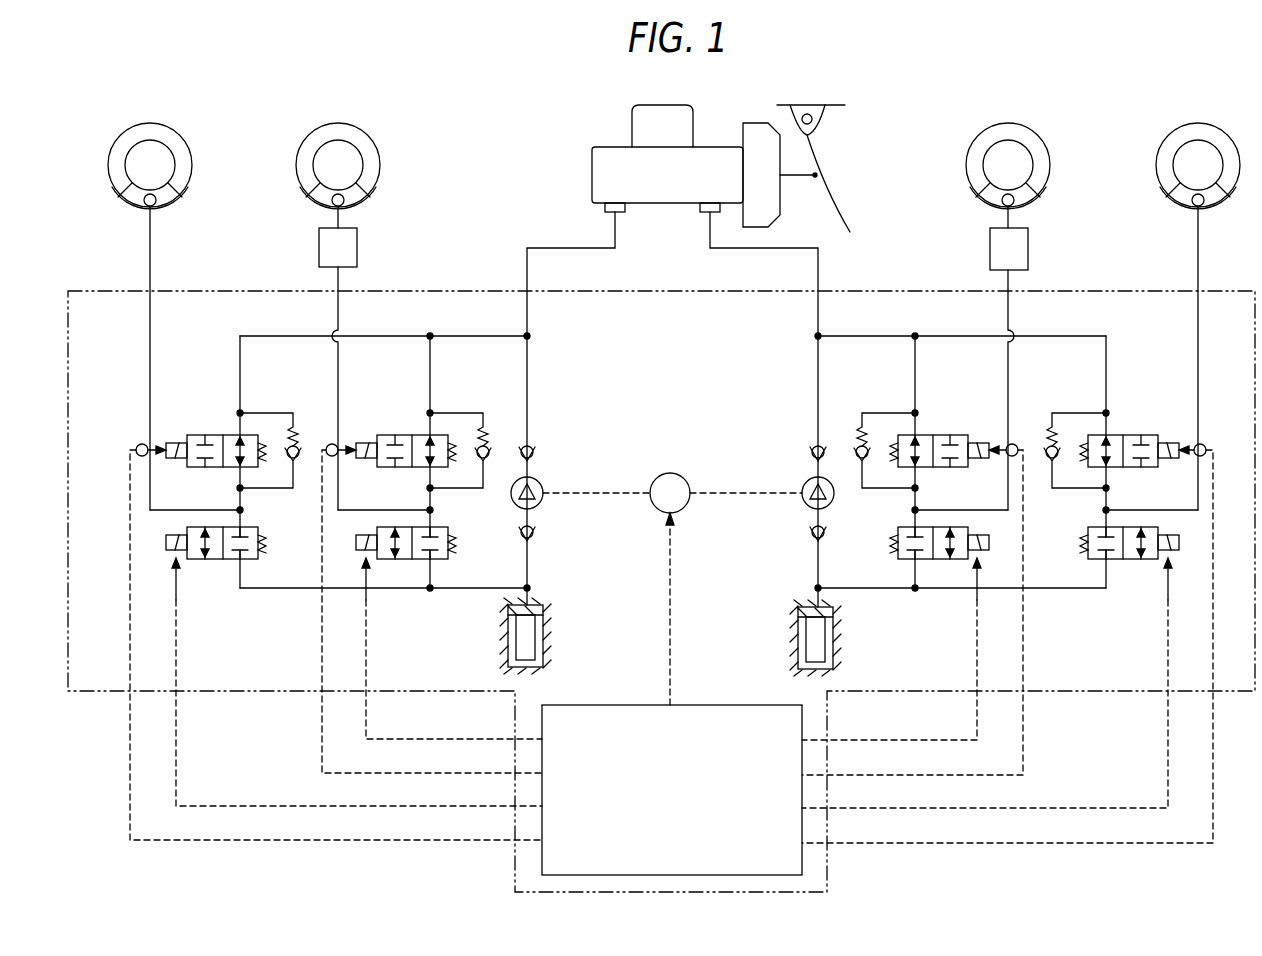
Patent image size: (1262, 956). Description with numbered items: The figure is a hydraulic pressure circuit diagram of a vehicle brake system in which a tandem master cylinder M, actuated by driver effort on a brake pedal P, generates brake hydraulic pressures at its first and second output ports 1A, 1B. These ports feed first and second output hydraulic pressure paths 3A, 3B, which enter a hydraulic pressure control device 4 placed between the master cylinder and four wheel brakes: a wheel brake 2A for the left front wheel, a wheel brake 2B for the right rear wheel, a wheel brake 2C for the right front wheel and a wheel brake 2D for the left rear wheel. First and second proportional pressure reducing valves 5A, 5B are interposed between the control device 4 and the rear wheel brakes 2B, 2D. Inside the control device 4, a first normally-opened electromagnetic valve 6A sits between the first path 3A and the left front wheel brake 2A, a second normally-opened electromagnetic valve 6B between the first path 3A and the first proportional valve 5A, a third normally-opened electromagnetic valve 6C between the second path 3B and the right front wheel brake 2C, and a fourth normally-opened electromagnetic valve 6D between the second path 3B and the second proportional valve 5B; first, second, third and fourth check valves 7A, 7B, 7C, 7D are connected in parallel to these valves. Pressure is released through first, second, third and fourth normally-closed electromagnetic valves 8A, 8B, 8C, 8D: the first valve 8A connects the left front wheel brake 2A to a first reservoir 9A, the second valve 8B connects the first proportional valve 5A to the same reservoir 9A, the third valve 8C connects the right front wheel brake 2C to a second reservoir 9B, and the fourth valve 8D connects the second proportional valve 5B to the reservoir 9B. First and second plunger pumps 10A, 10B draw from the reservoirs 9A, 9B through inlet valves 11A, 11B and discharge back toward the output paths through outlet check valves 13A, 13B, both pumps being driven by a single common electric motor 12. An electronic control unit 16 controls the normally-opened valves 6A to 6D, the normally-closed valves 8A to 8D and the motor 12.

The first output port 1A is at (605, 208).
The second output port 1B is at (702, 208).
The wheel brake for left front wheel 2A is at (192, 135).
The wheel brake for right rear wheel 2B is at (380, 135).
The wheel brake for right front wheel 2C is at (1153, 135).
The wheel brake for left rear wheel 2D is at (963, 135).
The first output hydraulic pressure path 3A is at (527, 265).
The second output hydraulic pressure path 3B is at (818, 265).
The hydraulic pressure control device 4 is at (258, 291).
The first proportional pressure reducing valve 5A is at (357, 247).
The second proportional pressure reducing valve 5B is at (1028, 247).
The first normally-opened electromagnetic valve 6A is at (226, 435).
The second normally-opened electromagnetic valve 6B is at (416, 435).
The third normally-opened electromagnetic valve 6C is at (1124, 435).
The fourth normally-opened electromagnetic valve 6D is at (955, 422).
The first check valve 7A is at (300, 445).
The second check valve 7B is at (490, 445).
The third check valve 7C is at (1045, 445).
The fourth check valve 7D is at (855, 445).
The first normally-closed electromagnetic valve 8A is at (196, 563).
The second normally-closed electromagnetic valve 8B is at (392, 563).
The third normally-closed electromagnetic valve 8C is at (1150, 563).
The fourth normally-closed electromagnetic valve 8D is at (958, 563).
The first reservoir 9A is at (543, 633).
The second reservoir 9B is at (798, 638).
The first plunger pump 10A is at (543, 481).
The second plunger pump 10B is at (802, 481).
The inlet valve 11A is at (533, 530).
The inlet valve 11B is at (812, 530).
The electric motor 12 is at (680, 474).
The discharge check valve 13A is at (536, 447).
The discharge check valve 13B is at (810, 447).
The electronic control unit 16 is at (685, 808).
The tandem master cylinder M is at (592, 177).
The brake pedal P is at (829, 218).